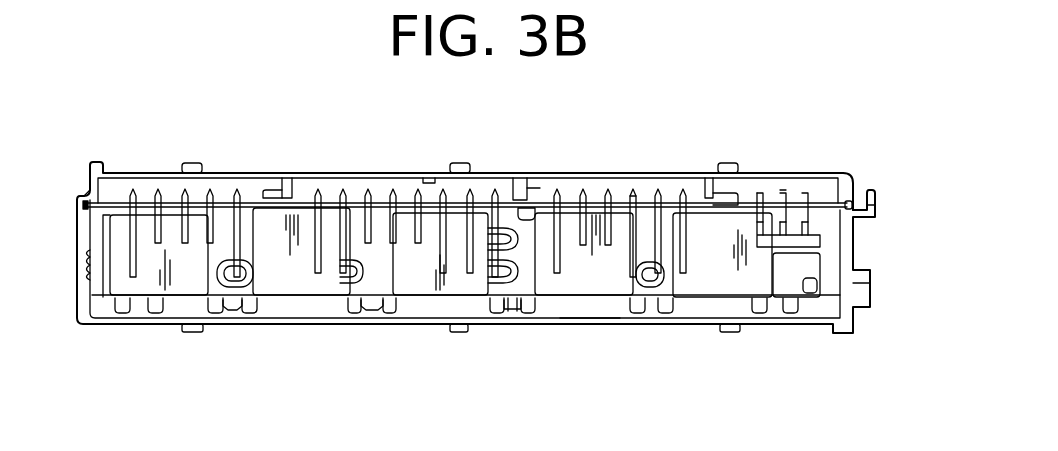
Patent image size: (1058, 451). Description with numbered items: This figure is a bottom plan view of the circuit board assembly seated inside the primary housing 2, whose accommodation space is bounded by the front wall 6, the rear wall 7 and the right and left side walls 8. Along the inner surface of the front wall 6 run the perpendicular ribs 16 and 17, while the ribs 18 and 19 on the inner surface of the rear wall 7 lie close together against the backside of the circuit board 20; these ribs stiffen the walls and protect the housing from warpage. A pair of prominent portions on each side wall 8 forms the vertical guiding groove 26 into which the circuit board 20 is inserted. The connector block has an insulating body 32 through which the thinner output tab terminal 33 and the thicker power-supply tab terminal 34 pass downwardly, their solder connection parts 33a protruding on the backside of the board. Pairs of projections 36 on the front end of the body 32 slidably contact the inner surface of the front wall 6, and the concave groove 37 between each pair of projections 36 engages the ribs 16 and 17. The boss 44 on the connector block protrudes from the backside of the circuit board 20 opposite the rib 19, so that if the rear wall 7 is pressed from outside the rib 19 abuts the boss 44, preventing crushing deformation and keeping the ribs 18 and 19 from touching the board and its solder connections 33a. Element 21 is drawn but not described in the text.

The primary housing 2 is at (853, 172).
The front wall 6 is at (593, 325).
The rear wall 7 is at (600, 173).
The side walls 8 is at (840, 260).
The rib 16 is at (367, 313).
The rib 17 is at (512, 313).
The rib 18 is at (290, 196).
The rib 19 is at (530, 188).
The circuit board 20 is at (747, 200).
The relay 21 is at (707, 285).
The guiding groove 26 is at (78, 199).
The body 32 is at (822, 303).
The tab terminal 33 is at (650, 287).
The solder connection part 33a is at (638, 198).
The tab terminal 34 is at (800, 235).
The projections 36 is at (355, 314).
The concave groove 37 is at (363, 313).
The boss 44 is at (520, 200).